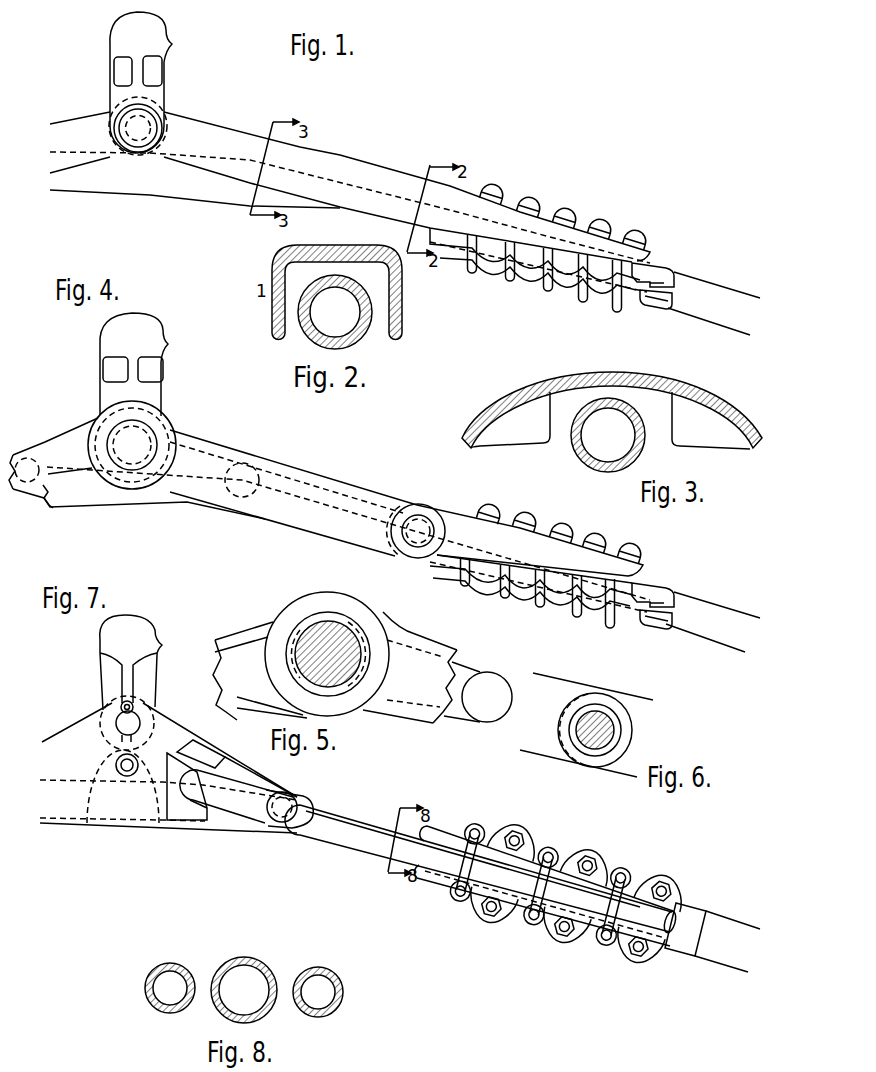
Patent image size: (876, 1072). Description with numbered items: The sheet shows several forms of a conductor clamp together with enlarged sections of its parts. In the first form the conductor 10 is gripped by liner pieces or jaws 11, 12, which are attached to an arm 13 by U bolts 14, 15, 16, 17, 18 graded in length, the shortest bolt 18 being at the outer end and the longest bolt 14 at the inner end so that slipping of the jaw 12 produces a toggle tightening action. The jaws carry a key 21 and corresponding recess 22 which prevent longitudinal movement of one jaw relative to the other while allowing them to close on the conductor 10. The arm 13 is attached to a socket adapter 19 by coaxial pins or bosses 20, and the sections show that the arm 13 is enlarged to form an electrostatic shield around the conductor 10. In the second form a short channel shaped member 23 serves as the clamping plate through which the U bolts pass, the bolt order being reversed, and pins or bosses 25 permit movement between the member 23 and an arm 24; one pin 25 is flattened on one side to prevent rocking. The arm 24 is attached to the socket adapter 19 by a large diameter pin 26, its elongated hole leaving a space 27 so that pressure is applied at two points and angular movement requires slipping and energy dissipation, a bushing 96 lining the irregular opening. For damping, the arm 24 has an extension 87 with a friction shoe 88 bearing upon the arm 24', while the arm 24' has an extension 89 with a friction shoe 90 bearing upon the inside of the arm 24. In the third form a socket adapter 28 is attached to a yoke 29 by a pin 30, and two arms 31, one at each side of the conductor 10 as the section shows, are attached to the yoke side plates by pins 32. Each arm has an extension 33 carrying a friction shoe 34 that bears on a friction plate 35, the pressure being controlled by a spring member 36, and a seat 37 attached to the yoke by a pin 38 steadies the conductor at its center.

In FIG. 1, the conductor 10 is at (753, 297).
In FIG. 2, the conductor 10 is at (357, 340).
In FIG. 3, the conductor 10 is at (590, 468).
In FIG. 4, the conductor 10 is at (702, 602).
In FIG. 7, the conductor 10 is at (742, 963).
In FIG. 8, the conductor 10 is at (237, 962).
In FIG. 1, the liner piece 11 is at (652, 264).
In FIG. 4, the liner piece 11 is at (640, 585).
In FIG. 1, the liner piece 12 is at (652, 303).
In FIG. 4, the liner piece 12 is at (620, 625).
In FIG. 1, the arm 13 is at (82, 127).
In FIG. 2, the arm 13 is at (400, 302).
In FIG. 3, the arm 13 is at (515, 390).
In FIG. 1, the U bolt 14 is at (485, 237).
In FIG. 4, the U bolt 14 is at (619, 595).
In FIG. 1, the U bolt 15 is at (521, 249).
In FIG. 4, the U bolt 15 is at (585, 584).
In FIG. 1, the U bolt 16 is at (556, 259).
In FIG. 4, the U bolt 16 is at (552, 574).
In FIG. 1, the U bolt 17 is at (591, 268).
In FIG. 4, the U bolt 17 is at (516, 563).
In FIG. 1, the U bolt 18 is at (622, 279).
In FIG. 4, the U bolt 18 is at (479, 552).
In FIG. 1, the socket adapter 19 is at (157, 72).
In FIG. 4, the socket adapter 19 is at (157, 372).
In FIG. 1, the pin 20 is at (139, 128).
In FIG. 1, the key 21 is at (655, 284).
In FIG. 4, the key 21 is at (640, 600).
In FIG. 1, the recess 22 is at (655, 298).
In FIG. 4, the recess 22 is at (640, 616).
In FIG. 4, the channel shaped member 23 is at (467, 515).
In FIG. 6, the channel shaped member 23 is at (652, 700).
In FIG. 4, the arm 24 is at (255, 478).
In FIG. 5, the arm 24 is at (410, 679).
In FIG. 6, the arm 24 is at (593, 676).
In FIG. 4, the arm 24' is at (55, 433).
In FIG. 4, the pin 25 is at (417, 531).
In FIG. 6, the pin 25 is at (598, 712).
In FIG. 4, the pin 26 is at (133, 445).
In FIG. 5, the pin 26 is at (338, 628).
In FIG. 5, the space 27 is at (297, 640).
In FIG. 7, the socket adapter 28 is at (115, 667).
In FIG. 7, the yoke 29 is at (170, 730).
In FIG. 7, the pin 30 is at (127, 723).
In FIG. 7, the arm 31 is at (363, 838).
In FIG. 8, the arm 31 is at (150, 985).
In FIG. 7, the pin 32 is at (282, 815).
In FIG. 7, the extension 33 is at (183, 773).
In FIG. 7, the friction shoe 34 is at (188, 812).
In FIG. 7, the friction plate 35 is at (205, 752).
In FIG. 7, the spring member 36 is at (237, 800).
In FIG. 7, the seat 37 is at (120, 823).
In FIG. 7, the pin 38 is at (120, 760).
In FIG. 4, the extension 87 is at (45, 480).
In FIG. 5, the extension 87 is at (230, 662).
In FIG. 4, the friction shoe 88 is at (28, 457).
In FIG. 4, the extension 89 is at (217, 487).
In FIG. 5, the extension 89 is at (450, 700).
In FIG. 5, the friction shoe 90 is at (487, 713).
In FIG. 5, the bushing 96 is at (330, 615).